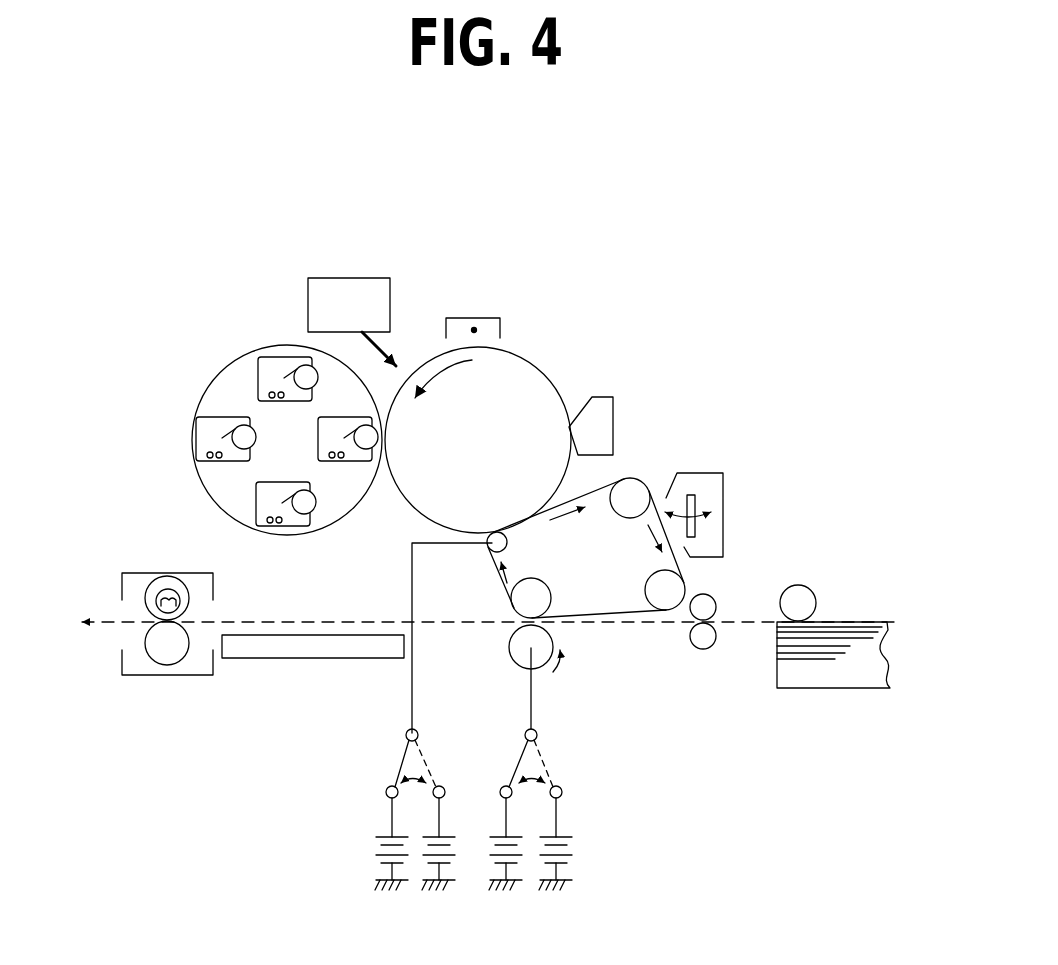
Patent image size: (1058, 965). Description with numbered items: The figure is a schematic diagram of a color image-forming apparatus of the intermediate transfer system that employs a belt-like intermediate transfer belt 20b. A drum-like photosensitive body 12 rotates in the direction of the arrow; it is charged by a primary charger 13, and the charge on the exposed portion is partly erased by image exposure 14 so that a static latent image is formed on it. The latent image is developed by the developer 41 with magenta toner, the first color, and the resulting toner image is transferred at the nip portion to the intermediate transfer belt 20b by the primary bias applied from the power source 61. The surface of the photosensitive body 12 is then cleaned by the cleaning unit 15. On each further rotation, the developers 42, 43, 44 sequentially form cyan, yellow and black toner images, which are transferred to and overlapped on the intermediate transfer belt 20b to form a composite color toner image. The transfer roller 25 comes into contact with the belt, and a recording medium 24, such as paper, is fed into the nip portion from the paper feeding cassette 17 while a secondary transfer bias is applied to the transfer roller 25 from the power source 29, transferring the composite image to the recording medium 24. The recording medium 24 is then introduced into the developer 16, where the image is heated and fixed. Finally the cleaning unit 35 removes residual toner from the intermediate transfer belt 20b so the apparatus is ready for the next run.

The photosensitive body 12 is at (541, 368).
The primary charger 13 is at (472, 318).
The image exposure 14 is at (396, 346).
The cleaning unit 15 is at (613, 414).
The developer 16 is at (150, 573).
The paper feeding cassette 17 is at (817, 690).
The intermediate transfer belt 20b is at (607, 481).
The recording medium 24 is at (850, 620).
The transfer roller 25 is at (518, 665).
The power source 29 is at (590, 854).
The cleaning unit 35 is at (723, 528).
The developer 41 is at (362, 460).
The developer 42 is at (290, 368).
The developer 43 is at (205, 437).
The developer 44 is at (297, 527).
The power source 61 is at (360, 850).